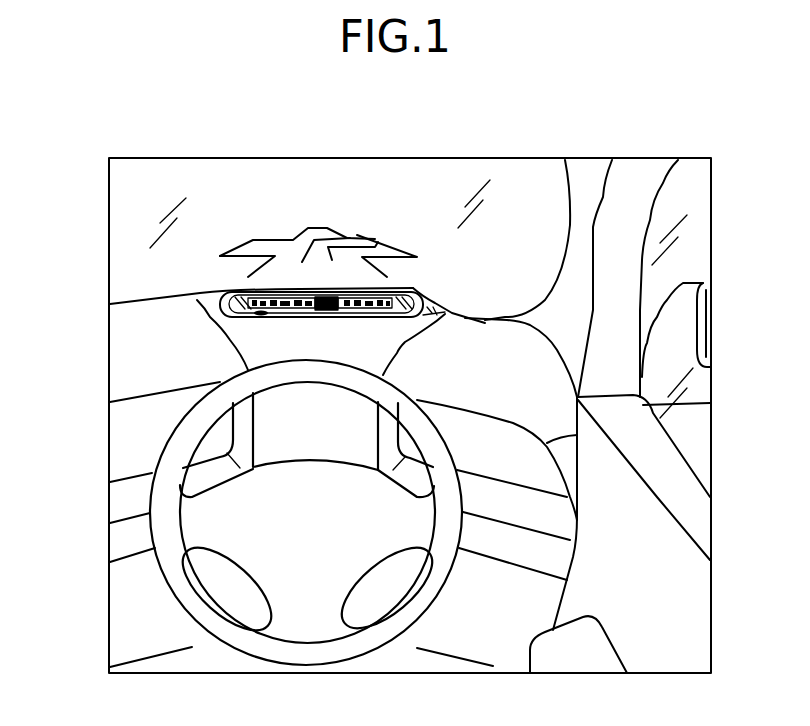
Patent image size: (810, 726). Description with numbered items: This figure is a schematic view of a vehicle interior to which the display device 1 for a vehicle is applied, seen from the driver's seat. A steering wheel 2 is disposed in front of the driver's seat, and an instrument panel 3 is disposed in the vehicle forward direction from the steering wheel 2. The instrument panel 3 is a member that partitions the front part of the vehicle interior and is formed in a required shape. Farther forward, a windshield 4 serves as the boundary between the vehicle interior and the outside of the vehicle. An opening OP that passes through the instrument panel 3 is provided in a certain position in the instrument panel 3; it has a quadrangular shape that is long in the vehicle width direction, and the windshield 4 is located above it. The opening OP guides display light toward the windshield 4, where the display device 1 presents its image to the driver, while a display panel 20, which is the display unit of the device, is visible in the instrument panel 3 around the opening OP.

The display device for a vehicle 1 is at (203, 249).
The steering wheel 2 is at (338, 575).
The instrument panel 3 is at (370, 353).
The windshield 4 is at (432, 182).
The display panel 20 is at (415, 293).
The opening OP is at (243, 315).